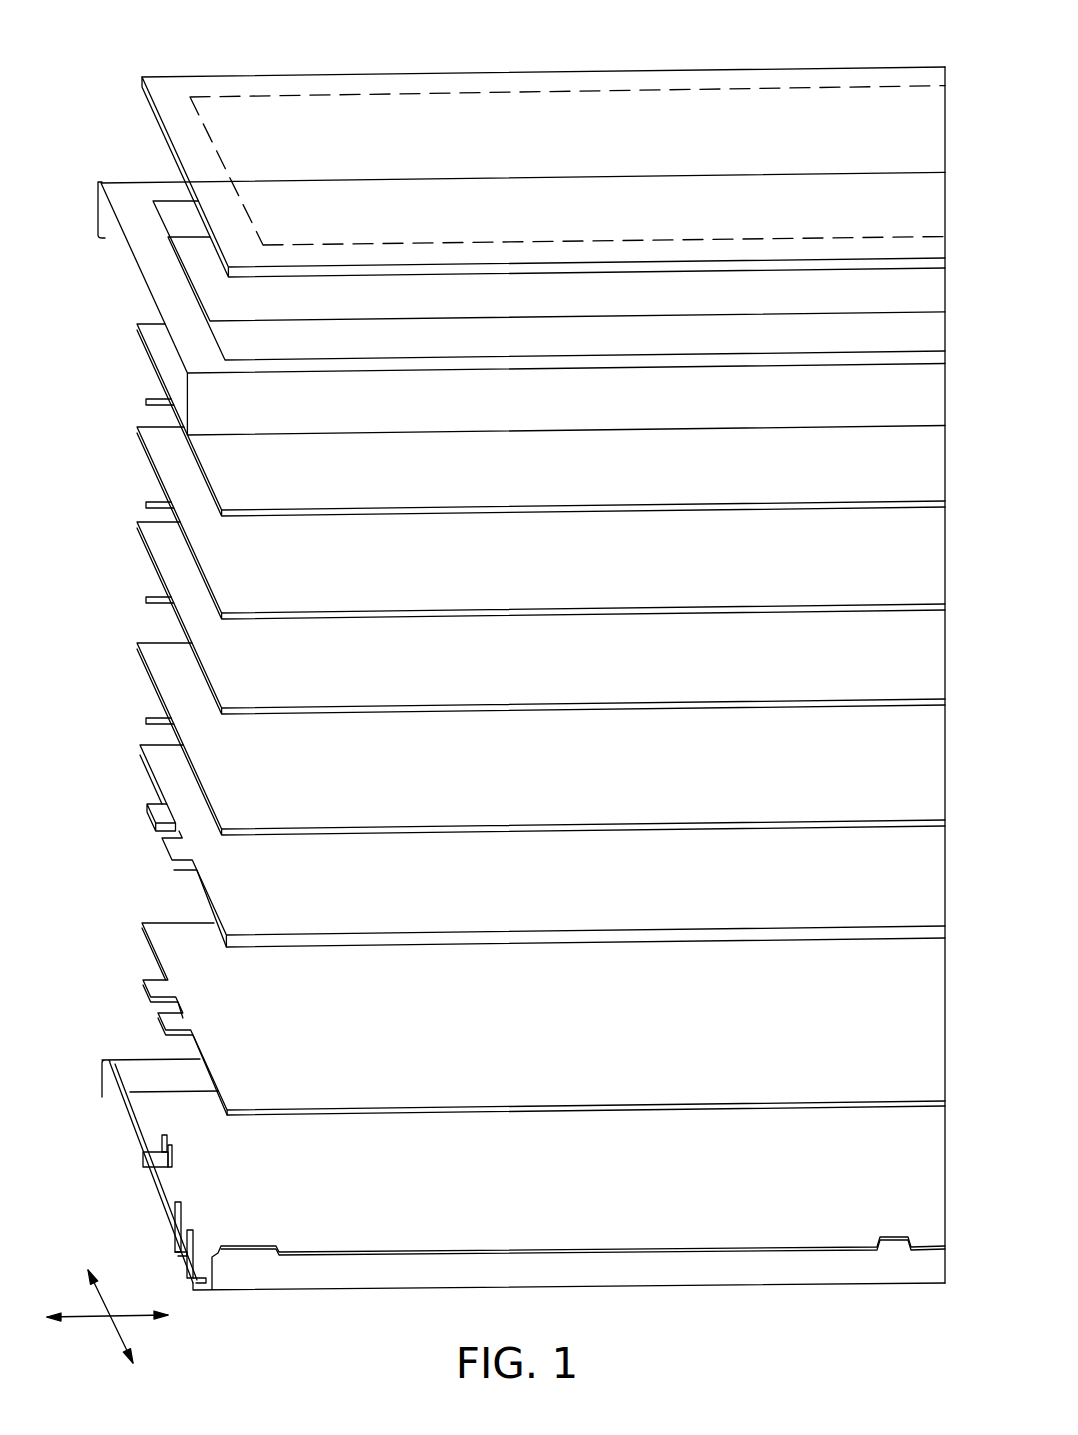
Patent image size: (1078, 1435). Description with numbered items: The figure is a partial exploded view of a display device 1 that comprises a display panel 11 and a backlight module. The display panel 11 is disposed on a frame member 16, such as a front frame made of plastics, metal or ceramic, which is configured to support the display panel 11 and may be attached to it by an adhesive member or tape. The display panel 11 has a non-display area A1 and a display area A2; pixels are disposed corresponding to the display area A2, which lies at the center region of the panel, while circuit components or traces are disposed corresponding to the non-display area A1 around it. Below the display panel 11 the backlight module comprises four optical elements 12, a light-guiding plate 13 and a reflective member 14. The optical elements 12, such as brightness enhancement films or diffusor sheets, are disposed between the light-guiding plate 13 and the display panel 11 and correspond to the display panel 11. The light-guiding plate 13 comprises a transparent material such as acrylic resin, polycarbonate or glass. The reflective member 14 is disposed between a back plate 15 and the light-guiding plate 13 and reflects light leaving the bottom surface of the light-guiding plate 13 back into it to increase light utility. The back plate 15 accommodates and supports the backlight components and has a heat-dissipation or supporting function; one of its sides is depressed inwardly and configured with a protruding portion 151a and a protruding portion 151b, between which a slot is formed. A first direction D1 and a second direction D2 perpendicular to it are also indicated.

The display device 1 is at (142, 44).
The display panel 11 is at (168, 117).
The optical element 12 is at (131, 324).
The light-guiding plate 13 is at (163, 777).
The reflective member 14 is at (167, 950).
The back plate 15 is at (130, 1117).
The frame member 16 is at (142, 243).
The protruding portion 151a is at (170, 1137).
The protruding portion 151b is at (172, 1155).
The non-display area A1 is at (792, 78).
The display area A2 is at (667, 112).
The first direction D1 is at (99, 1300).
The second direction D2 is at (130, 1317).